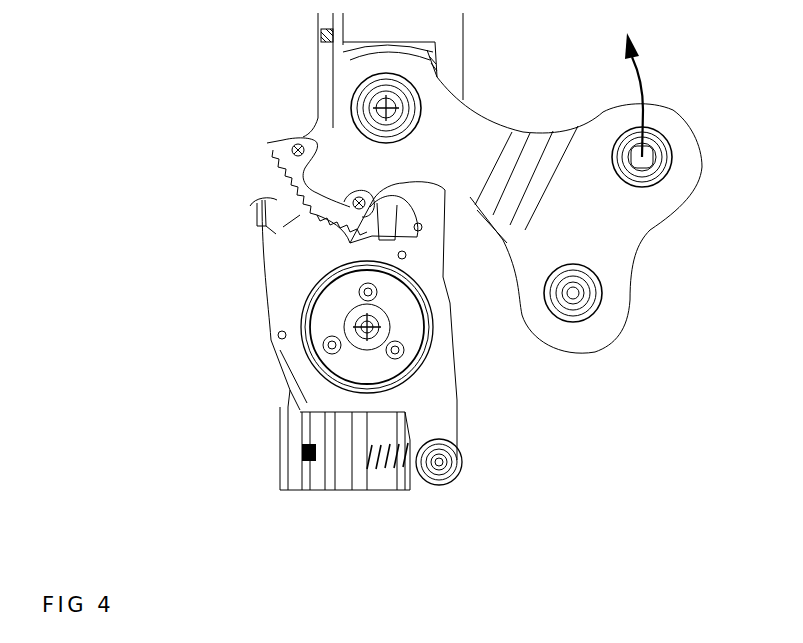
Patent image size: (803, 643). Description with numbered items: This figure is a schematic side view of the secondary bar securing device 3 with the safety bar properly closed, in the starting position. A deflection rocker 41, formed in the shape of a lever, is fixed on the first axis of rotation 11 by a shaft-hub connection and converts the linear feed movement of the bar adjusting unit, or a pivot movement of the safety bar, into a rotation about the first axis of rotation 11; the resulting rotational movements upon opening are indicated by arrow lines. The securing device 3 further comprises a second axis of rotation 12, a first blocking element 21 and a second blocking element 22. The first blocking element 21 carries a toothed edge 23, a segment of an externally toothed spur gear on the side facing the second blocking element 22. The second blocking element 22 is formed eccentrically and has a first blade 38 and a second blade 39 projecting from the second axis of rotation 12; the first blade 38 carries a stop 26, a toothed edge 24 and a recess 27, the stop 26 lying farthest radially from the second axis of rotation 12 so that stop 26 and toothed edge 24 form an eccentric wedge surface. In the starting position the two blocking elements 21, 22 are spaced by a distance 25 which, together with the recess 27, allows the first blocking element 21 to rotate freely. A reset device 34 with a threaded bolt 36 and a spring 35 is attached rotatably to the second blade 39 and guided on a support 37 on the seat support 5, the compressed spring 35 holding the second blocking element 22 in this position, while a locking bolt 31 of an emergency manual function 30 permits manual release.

The secondary bar securing device 3 is at (216, 93).
The seat support 5 is at (327, 43).
The first axis of rotation 11 is at (386, 108).
The second axis of rotation 12 is at (362, 327).
The first blocking element 21 is at (280, 155).
The toothed edge 23 is at (254, 169).
The second blocking element 22 is at (267, 223).
The toothed edge 24 is at (312, 216).
The distance 25 is at (308, 213).
The stop 26 is at (266, 207).
The recess 27 is at (350, 243).
The emergency manual function 30 is at (455, 450).
The locking bolt 31 is at (450, 466).
The reset device 34 is at (358, 483).
The spring 35 is at (367, 461).
The threaded bolt 36 is at (302, 452).
The support 37 is at (357, 431).
The first blade 38 is at (276, 233).
The second blade 39 is at (430, 410).
The deflection rocker 41 is at (448, 143).